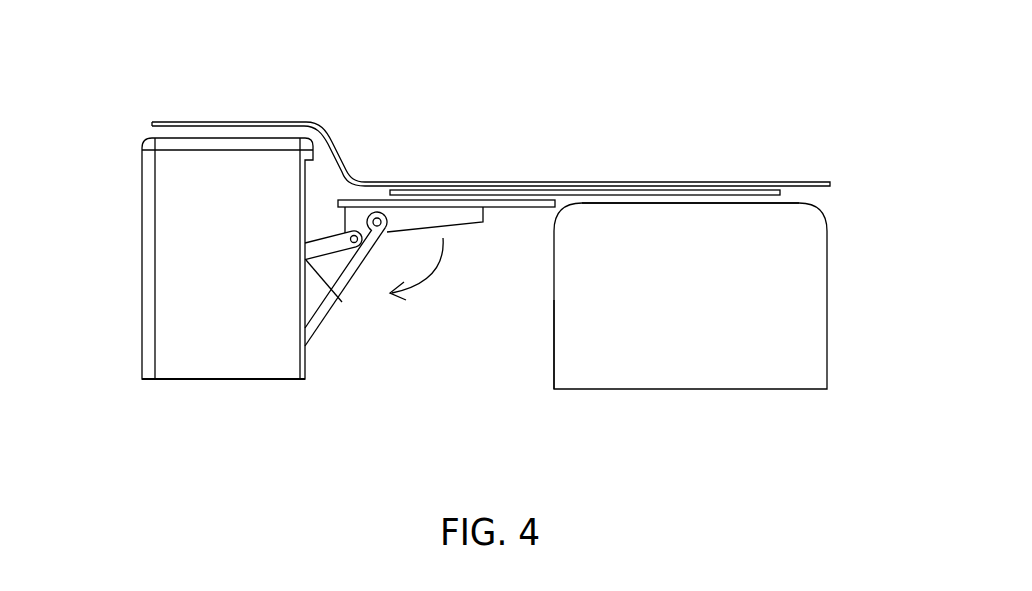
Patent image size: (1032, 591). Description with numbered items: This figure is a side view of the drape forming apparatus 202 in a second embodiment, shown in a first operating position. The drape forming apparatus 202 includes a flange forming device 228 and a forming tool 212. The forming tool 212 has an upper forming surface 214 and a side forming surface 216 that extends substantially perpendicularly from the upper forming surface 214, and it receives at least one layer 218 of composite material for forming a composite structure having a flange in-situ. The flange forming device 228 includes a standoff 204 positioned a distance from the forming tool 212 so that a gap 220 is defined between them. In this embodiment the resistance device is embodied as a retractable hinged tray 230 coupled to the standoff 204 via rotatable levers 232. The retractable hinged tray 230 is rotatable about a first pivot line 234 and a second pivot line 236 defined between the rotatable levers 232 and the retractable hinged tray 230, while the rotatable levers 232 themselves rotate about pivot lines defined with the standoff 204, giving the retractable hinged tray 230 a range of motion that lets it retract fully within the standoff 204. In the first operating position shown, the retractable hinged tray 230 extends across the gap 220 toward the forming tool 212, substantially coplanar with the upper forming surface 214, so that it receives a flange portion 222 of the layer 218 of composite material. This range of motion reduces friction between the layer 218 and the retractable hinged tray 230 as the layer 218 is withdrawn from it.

The drape forming apparatus 202 is at (791, 67).
The standoff 204 is at (142, 270).
The forming tool 212 is at (827, 250).
The upper forming surface 214 is at (797, 201).
The side forming surface 216 is at (554, 334).
The layer of composite material 218 is at (745, 191).
The gap 220 is at (420, 392).
The flange portion 222 is at (486, 182).
The flange forming device 228 is at (125, 74).
The retractable hinged tray 230 is at (497, 207).
The rotatable levers 232 is at (346, 274).
The first pivot line 234 is at (357, 230).
The second pivot line 236 is at (378, 218).